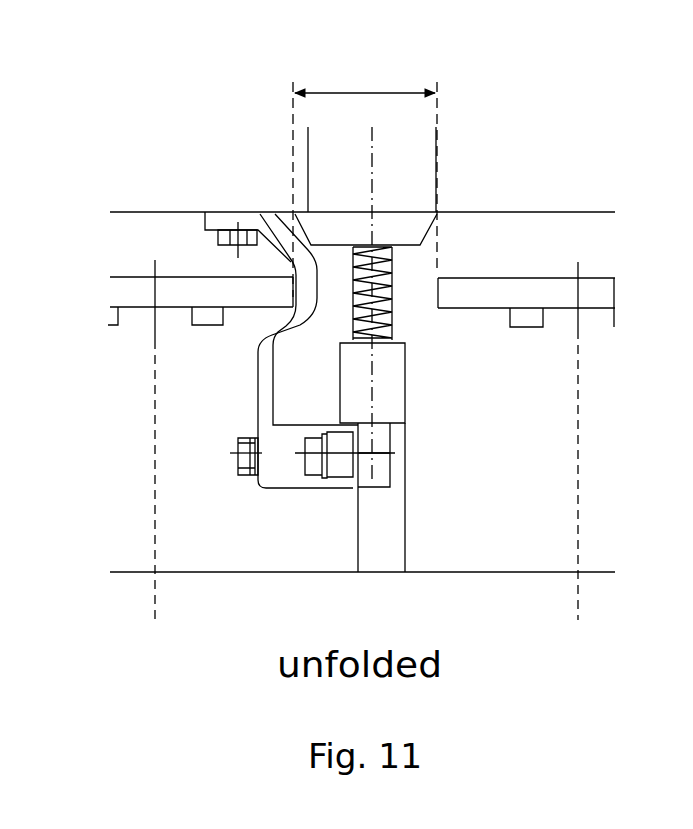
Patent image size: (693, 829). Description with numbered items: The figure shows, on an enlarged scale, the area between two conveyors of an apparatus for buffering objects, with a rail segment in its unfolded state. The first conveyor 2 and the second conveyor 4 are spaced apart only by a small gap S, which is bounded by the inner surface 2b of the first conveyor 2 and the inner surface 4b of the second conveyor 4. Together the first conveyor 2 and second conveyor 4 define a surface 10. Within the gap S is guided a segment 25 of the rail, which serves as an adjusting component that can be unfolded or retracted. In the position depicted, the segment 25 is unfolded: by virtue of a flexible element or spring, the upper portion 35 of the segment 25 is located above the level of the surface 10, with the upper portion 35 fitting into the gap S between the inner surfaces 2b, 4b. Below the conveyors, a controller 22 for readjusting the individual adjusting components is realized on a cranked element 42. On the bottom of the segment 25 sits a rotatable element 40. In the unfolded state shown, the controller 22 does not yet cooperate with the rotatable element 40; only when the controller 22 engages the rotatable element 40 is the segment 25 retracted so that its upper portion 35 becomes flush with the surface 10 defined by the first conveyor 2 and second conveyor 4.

The first conveyor 2 is at (132, 292).
The second conveyor 4 is at (597, 297).
The surface 10 is at (182, 263).
The inner surface of first conveyor 2b is at (293, 296).
The inner surface of second conveyor 4b is at (438, 290).
The controller 22 is at (293, 477).
The segment 25 is at (429, 410).
The upper portion 35 is at (422, 233).
The rotatable element 40 is at (345, 458).
The cranked element 42 is at (262, 416).
The gap S is at (368, 93).